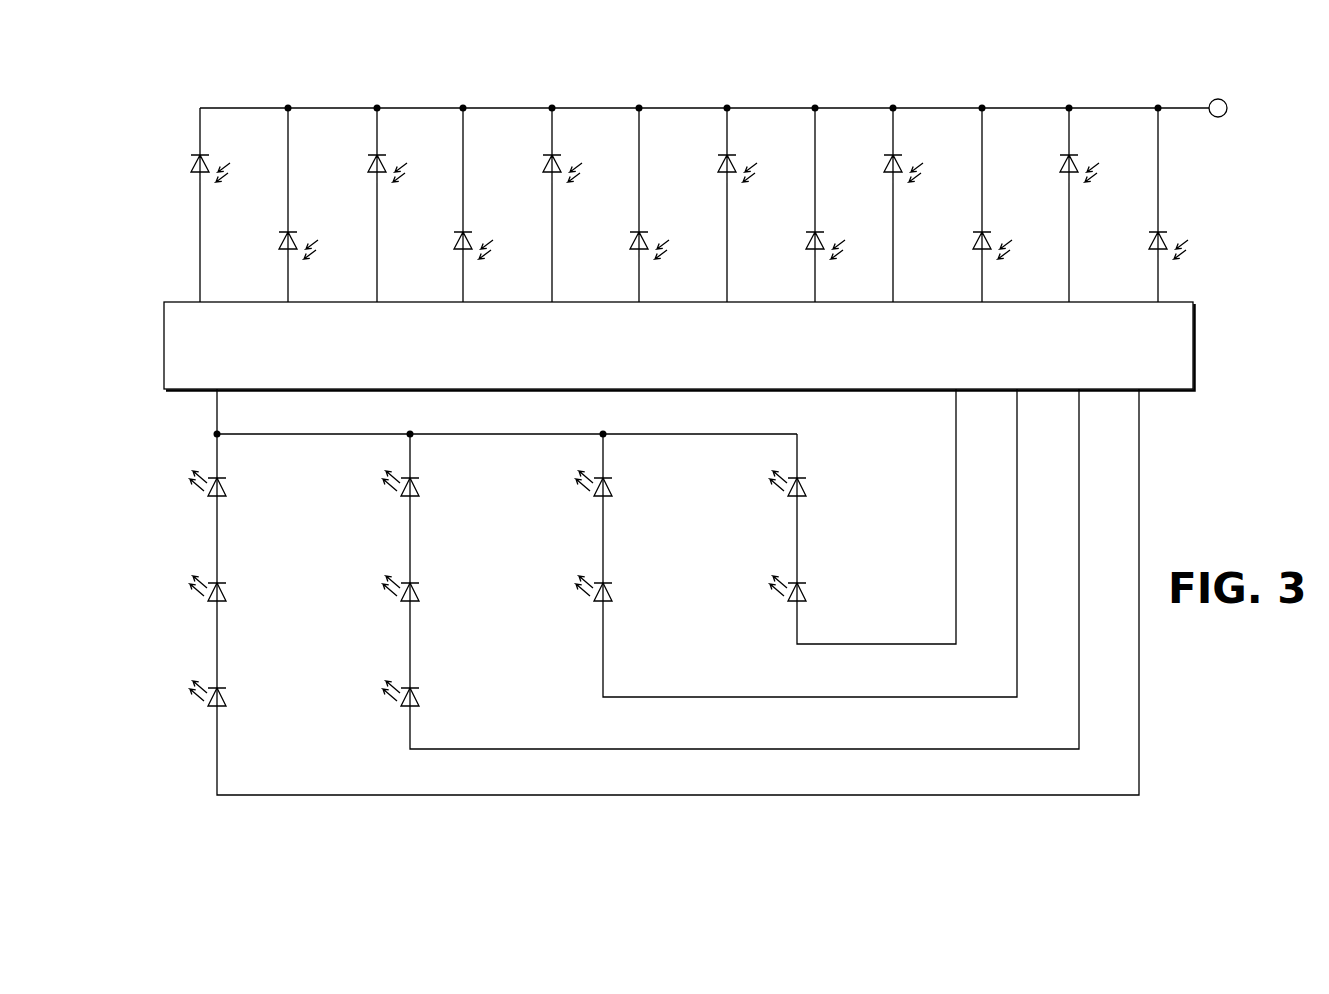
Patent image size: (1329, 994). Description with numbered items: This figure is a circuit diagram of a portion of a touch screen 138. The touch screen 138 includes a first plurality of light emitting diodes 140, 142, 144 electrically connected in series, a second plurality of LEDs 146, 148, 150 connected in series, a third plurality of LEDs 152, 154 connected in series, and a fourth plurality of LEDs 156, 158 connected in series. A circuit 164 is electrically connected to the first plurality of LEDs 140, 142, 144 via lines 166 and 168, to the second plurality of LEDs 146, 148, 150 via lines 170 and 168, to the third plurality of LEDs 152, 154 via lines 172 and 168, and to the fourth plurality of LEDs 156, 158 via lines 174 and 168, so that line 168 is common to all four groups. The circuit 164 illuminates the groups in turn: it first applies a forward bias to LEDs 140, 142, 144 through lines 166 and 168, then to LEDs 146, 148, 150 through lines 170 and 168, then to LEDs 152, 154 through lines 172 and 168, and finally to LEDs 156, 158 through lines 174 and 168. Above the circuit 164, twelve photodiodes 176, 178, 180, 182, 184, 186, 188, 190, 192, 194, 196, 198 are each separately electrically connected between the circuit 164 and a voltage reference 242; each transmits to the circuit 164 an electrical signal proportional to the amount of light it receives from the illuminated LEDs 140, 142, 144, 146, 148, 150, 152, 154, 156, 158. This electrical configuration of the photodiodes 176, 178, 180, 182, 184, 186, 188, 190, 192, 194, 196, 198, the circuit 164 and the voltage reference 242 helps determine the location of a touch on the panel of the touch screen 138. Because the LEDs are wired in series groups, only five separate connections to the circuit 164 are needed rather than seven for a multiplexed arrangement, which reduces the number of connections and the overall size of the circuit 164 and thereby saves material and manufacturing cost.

The touch screen 138 is at (95, 139).
The voltage reference 242 is at (1228, 108).
The photodiode 176 is at (191, 161).
The photodiode 178 is at (279, 241).
The photodiode 180 is at (368, 161).
The photodiode 182 is at (454, 241).
The photodiode 184 is at (543, 161).
The photodiode 186 is at (630, 241).
The photodiode 188 is at (718, 161).
The photodiode 190 is at (806, 241).
The photodiode 192 is at (884, 161).
The photodiode 194 is at (973, 241).
The photodiode 196 is at (1060, 161).
The photodiode 198 is at (1149, 241).
The circuit 164 is at (661, 360).
The line 168 is at (215, 413).
The line 174 is at (956, 406).
The line 172 is at (1017, 406).
The line 170 is at (1079, 406).
The line 166 is at (1139, 406).
The light emitting diode 140 is at (228, 490).
The light emitting diode 142 is at (228, 595).
The light emitting diode 144 is at (228, 700).
The light emitting diode 146 is at (421, 490).
The light emitting diode 148 is at (421, 595).
The light emitting diode 150 is at (421, 700).
The light emitting diode 152 is at (614, 490).
The light emitting diode 154 is at (614, 595).
The light emitting diode 156 is at (808, 490).
The light emitting diode 158 is at (808, 595).